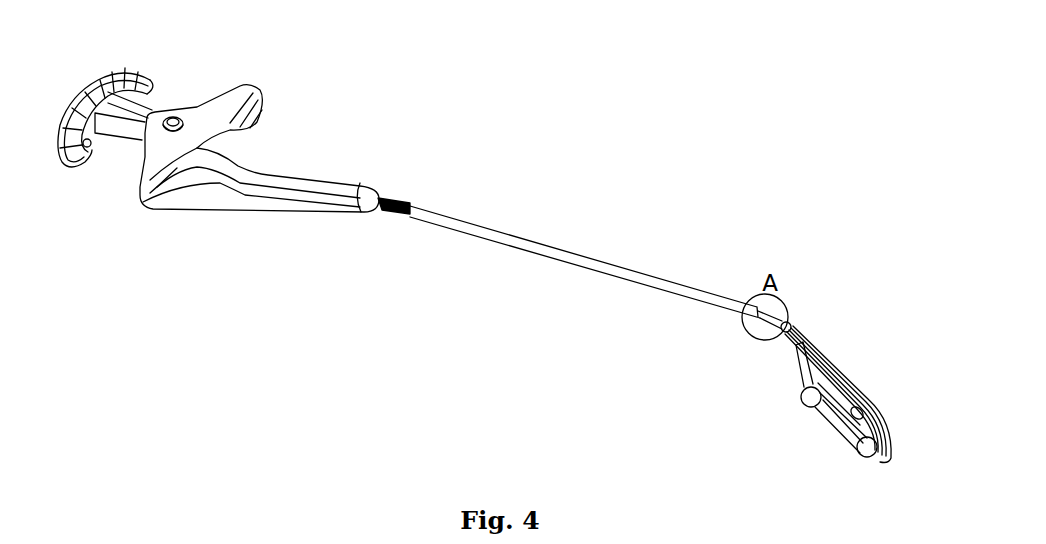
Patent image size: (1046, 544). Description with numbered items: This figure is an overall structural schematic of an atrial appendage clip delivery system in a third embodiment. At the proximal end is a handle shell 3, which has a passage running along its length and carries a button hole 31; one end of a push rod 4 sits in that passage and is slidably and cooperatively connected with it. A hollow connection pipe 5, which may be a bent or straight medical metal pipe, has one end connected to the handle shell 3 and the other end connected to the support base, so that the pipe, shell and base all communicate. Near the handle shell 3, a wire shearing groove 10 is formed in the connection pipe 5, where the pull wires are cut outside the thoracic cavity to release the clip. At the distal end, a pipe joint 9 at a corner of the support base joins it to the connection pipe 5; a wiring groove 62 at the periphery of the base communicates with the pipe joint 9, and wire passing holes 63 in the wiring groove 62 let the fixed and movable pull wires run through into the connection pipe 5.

The handle shell 3 is at (243, 148).
The push rod 4 is at (102, 75).
The connection pipe 5 is at (512, 232).
The pipe joint 9 is at (788, 325).
The wire shearing groove 10 is at (398, 203).
The button hole 31 is at (190, 118).
The wiring groove 62 is at (877, 405).
The wire passing hole 63 is at (837, 367).